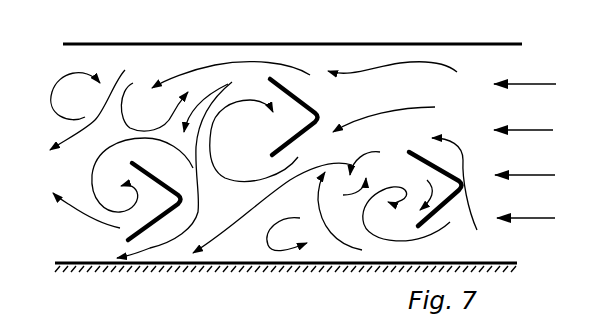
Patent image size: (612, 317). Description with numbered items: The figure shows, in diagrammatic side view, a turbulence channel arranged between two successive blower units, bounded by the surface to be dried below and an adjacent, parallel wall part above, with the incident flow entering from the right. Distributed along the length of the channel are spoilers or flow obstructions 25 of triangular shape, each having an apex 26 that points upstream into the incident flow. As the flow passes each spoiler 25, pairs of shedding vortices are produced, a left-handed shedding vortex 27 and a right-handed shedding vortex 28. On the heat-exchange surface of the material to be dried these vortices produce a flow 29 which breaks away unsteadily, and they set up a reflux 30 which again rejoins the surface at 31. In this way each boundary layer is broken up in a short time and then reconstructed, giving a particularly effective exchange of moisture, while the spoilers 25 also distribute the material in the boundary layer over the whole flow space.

The flow spoiler 25 is at (190, 180).
The apex 26 is at (468, 194).
The left-handed shedding vortex 27 is at (392, 187).
The right-handed shedding vortex 28 is at (278, 112).
The flow 29 is at (342, 253).
The reflux 30 is at (278, 247).
The rejoining point 31 is at (177, 253).